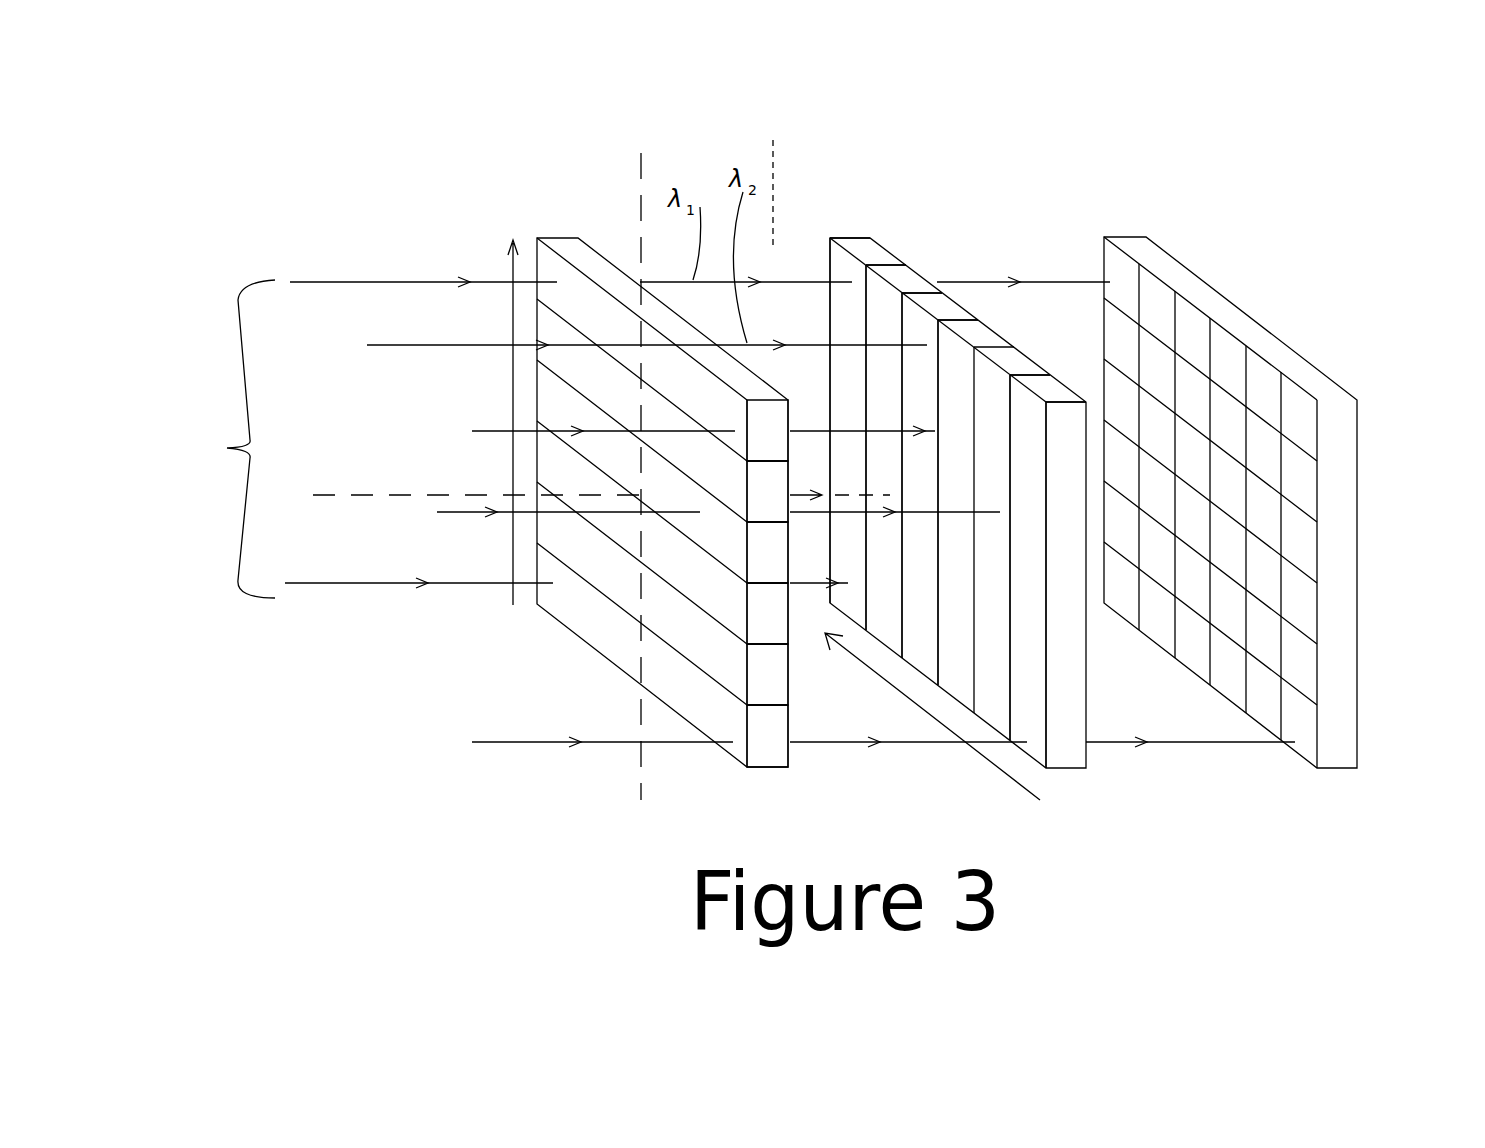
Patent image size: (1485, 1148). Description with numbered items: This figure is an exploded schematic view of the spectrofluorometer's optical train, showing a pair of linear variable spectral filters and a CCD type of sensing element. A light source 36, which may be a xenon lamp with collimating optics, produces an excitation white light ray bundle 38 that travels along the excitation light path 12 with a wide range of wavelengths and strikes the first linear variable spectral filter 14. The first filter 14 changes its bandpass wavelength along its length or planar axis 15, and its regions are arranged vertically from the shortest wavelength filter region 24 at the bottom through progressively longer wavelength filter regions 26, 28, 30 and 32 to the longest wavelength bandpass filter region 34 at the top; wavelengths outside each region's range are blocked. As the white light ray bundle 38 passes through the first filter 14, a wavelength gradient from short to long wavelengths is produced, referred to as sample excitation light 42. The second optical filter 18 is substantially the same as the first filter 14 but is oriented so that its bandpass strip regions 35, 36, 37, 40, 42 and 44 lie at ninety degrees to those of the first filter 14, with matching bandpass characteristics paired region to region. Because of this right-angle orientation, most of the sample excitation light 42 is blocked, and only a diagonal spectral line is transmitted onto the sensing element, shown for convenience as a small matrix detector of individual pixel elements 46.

The excitation light path 12 is at (393, 482).
The linear variable spectral filter 14 is at (578, 237).
The planar axis 15 is at (640, 200).
The second optical filter 18 is at (858, 238).
The shortest wavelength filter region 24 is at (767, 736).
The longer wavelength filter region 26 is at (767, 674).
The still longer wavelength filter region 28 is at (767, 613).
The filter region 30 is at (1223, 231).
The filter region 32 is at (767, 491).
The longest wavelength bandpass filter region 34 is at (767, 430).
The filter region 35 is at (828, 270).
The light source 36 is at (210, 463).
The filter region 37 is at (940, 312).
The excitation white light ray bundle 38 is at (465, 217).
The filter region 40 is at (990, 330).
The sample excitation light 42 is at (1017, 363).
The filter region 44 is at (1052, 390).
The detector element 46 is at (1113, 265).